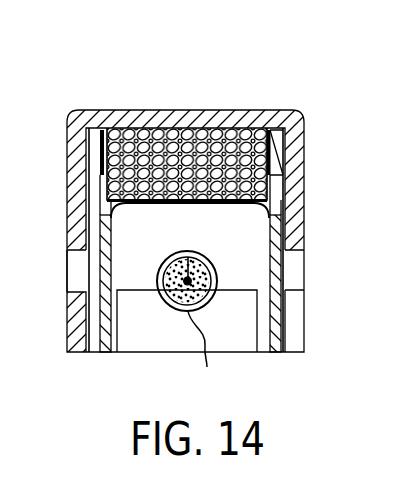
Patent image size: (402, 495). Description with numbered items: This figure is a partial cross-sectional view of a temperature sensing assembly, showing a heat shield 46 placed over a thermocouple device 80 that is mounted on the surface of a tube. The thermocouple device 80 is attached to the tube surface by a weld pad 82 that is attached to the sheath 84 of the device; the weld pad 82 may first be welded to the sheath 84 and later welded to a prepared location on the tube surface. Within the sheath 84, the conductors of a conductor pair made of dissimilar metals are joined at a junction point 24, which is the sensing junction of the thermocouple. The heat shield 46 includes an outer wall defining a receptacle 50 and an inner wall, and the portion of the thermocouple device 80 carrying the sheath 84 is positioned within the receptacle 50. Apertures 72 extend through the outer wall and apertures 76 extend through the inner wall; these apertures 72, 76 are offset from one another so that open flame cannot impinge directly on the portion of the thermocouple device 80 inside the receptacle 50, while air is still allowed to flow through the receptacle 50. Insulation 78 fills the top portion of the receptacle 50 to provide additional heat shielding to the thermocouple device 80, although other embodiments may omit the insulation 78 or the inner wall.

The heat shield 46 is at (208, 79).
The receptacle 50 is at (270, 253).
The apertures 72 is at (97, 198).
The apertures 76 is at (80, 275).
The insulation 78 is at (272, 141).
The thermocouple device 80 is at (222, 266).
The weld pad 82 is at (157, 338).
The sheath 84 is at (205, 352).
The junction point 24 is at (188, 252).